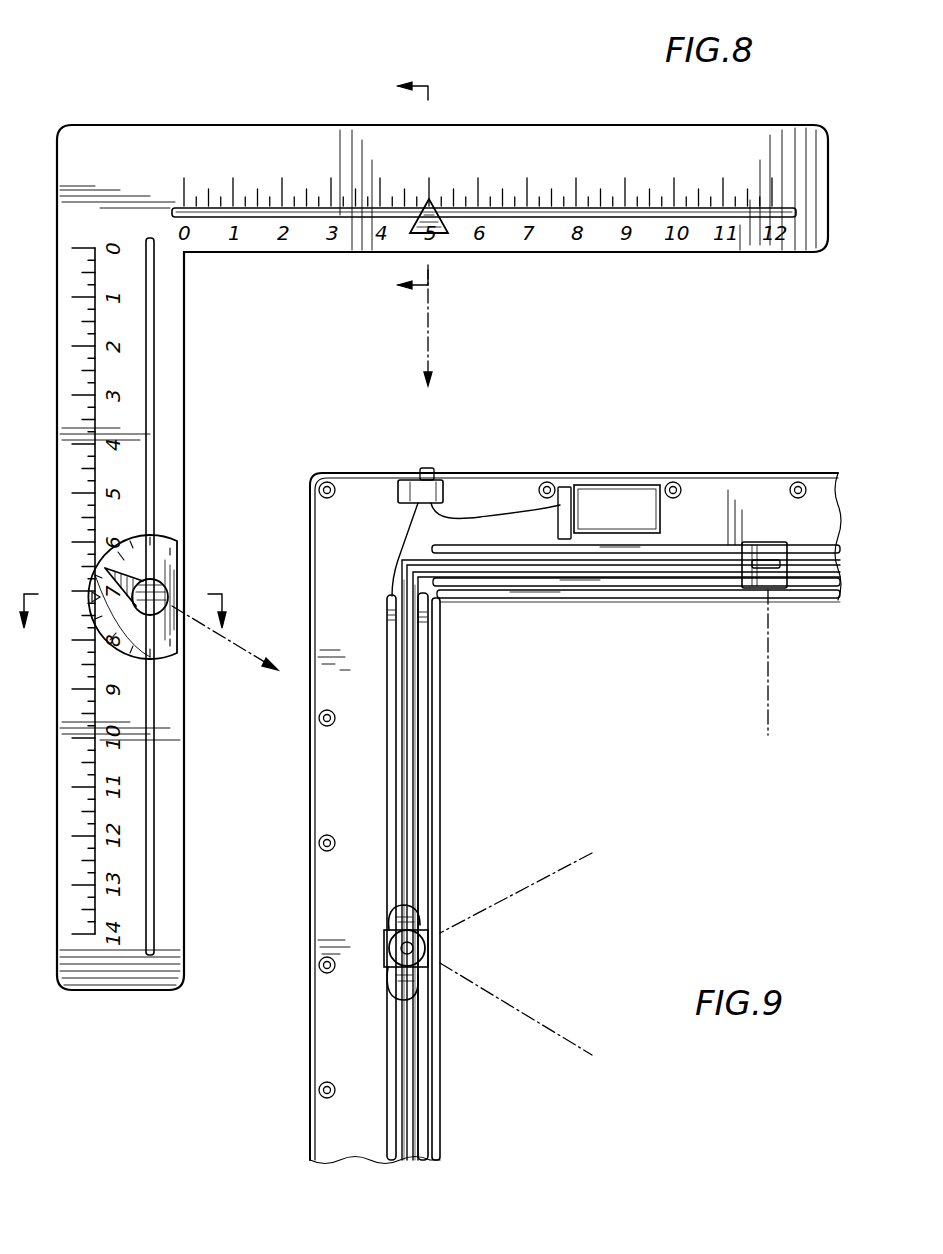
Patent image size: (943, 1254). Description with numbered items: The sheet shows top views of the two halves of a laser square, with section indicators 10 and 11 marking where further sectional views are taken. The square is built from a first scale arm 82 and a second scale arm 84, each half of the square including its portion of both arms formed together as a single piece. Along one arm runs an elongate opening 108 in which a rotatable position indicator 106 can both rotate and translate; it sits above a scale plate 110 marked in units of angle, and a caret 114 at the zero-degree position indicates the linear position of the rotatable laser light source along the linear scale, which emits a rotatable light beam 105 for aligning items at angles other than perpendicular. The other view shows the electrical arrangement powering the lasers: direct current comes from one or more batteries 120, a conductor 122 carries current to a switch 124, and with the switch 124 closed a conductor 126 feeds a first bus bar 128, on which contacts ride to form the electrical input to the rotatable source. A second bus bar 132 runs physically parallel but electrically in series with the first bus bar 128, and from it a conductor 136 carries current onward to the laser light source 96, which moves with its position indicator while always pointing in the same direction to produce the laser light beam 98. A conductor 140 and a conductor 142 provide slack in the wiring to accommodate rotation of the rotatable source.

In FIG. 8, the section line 10- 10 is at (399, 232).
In FIG. 8, the section line 11- 11 is at (146, 619).
In FIG. 8, the first scale arm 82 is at (774, 150).
In FIG. 8, the second scale arm 84 is at (118, 980).
In FIG. 9, the laser light source 96 is at (742, 590).
In FIG. 9, the laser light beam 98 is at (770, 725).
In FIG. 9, the rotatable light beam 105 is at (552, 860).
In FIG. 8, the rotatable position indicator 106 is at (165, 590).
In FIG. 8, the elongate opening 108 is at (150, 397).
In FIG. 8, the scale plate 110 is at (170, 640).
In FIG. 8, the caret 114 is at (120, 625).
In FIG. 9, the batteries 120 is at (615, 500).
In FIG. 9, the conductor 122 is at (492, 514).
In FIG. 9, the switch 124 is at (415, 482).
In FIG. 9, the conductor 126 is at (402, 540).
In FIG. 9, the first bus bar 128 is at (390, 602).
In FIG. 9, the second bus bar 132 is at (430, 690).
In FIG. 9, the conductor 136 is at (425, 600).
In FIG. 9, the conductor 140 is at (396, 910).
In FIG. 9, the conductor 142 is at (400, 1000).